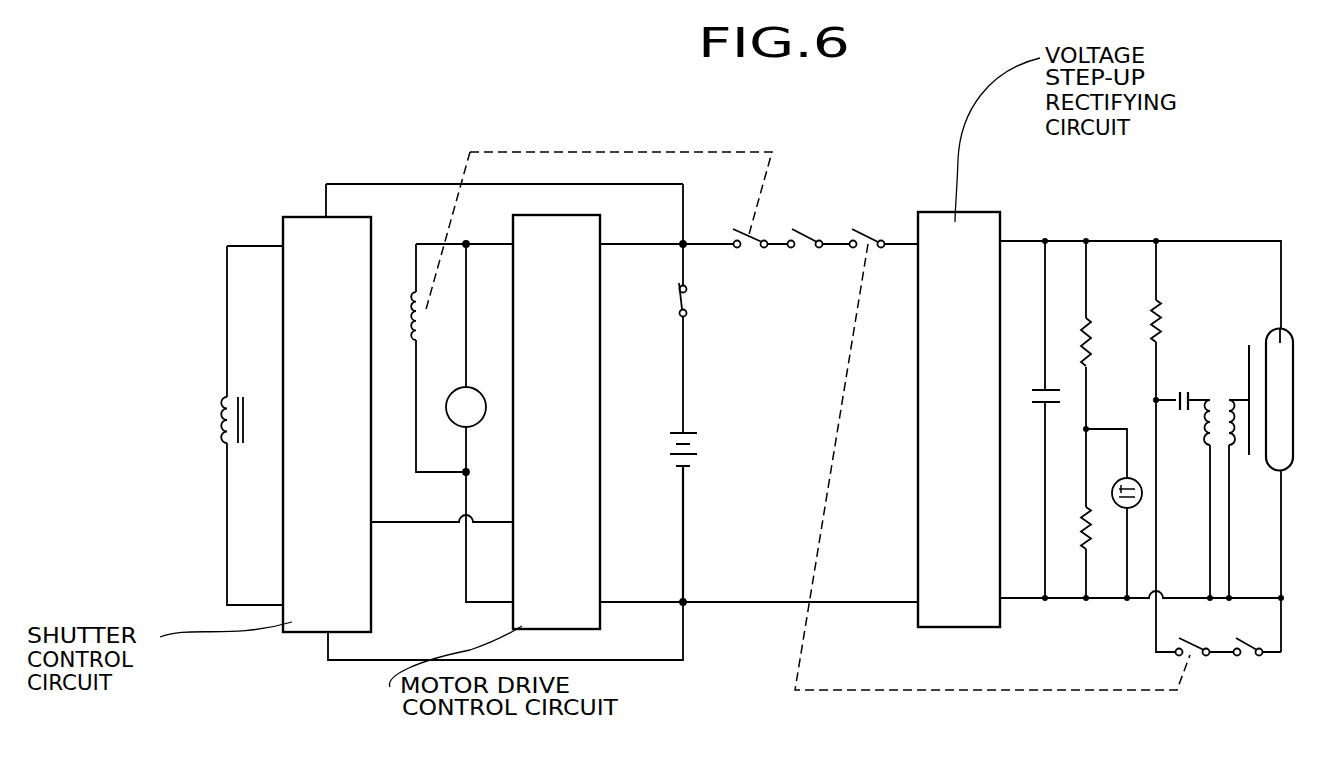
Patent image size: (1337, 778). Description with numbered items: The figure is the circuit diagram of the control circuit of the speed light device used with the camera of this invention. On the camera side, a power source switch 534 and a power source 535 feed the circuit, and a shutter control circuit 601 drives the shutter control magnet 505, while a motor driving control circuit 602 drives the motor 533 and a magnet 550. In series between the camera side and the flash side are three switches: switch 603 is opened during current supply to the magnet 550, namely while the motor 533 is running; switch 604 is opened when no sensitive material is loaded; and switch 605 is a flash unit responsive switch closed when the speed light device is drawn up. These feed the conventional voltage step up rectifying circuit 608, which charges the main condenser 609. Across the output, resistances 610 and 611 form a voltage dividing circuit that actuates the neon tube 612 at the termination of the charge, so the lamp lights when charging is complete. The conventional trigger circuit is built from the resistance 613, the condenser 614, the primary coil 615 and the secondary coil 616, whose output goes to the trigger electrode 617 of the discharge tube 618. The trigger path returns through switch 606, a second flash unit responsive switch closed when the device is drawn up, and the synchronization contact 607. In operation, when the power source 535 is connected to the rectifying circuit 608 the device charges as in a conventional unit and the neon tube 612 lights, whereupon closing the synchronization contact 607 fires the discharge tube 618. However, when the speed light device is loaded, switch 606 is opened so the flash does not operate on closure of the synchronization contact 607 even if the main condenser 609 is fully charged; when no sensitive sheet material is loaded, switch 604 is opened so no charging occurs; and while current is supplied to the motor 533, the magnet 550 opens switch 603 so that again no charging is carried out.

The shutter control magnet 505 is at (244, 422).
The magnet 550 is at (423, 333).
The motor 533 is at (480, 388).
The power source switch 534 is at (685, 300).
The power source 535 is at (698, 446).
The shutter control circuit 601 is at (361, 600).
The motor driving control circuit 602 is at (590, 616).
The switch 603 is at (748, 229).
The switch 604 is at (812, 229).
The switch 605 is at (870, 229).
The switch 606 is at (1197, 655).
The synchronization contact 607 is at (1248, 652).
The voltage step up rectifying circuit 608 is at (983, 225).
The main condenser 609 is at (1035, 398).
The resistance 610 is at (1092, 350).
The resistance 611 is at (1084, 536).
The neon tube 612 is at (1112, 485).
The resistance 613 is at (1163, 322).
The condenser 614 is at (1183, 392).
The primary coil 615 is at (1200, 430).
The secondary coil 616 is at (1235, 440).
The trigger electrode 617 is at (1250, 437).
The discharge tube 618 is at (1283, 380).